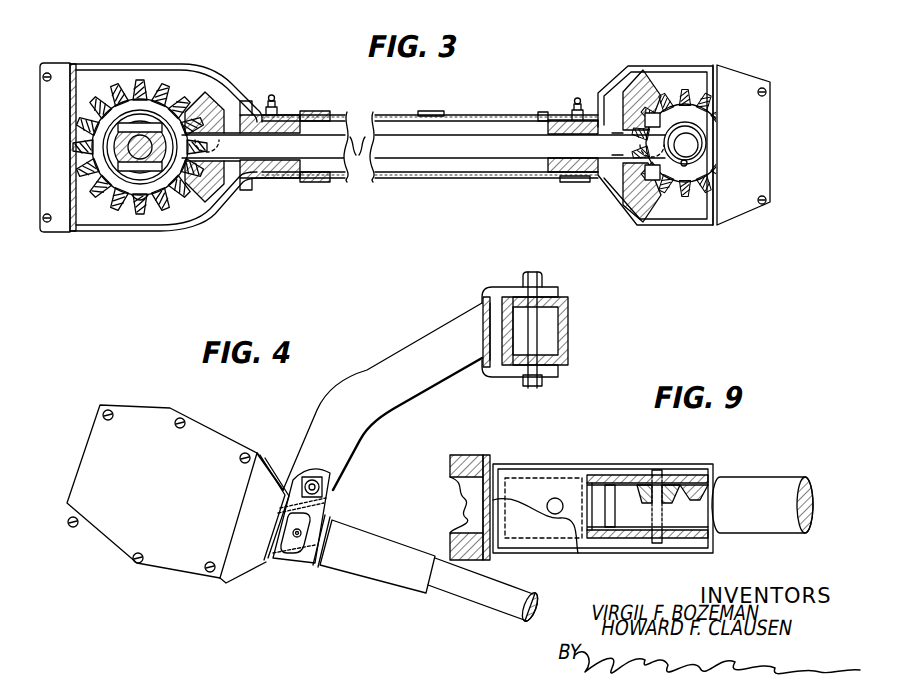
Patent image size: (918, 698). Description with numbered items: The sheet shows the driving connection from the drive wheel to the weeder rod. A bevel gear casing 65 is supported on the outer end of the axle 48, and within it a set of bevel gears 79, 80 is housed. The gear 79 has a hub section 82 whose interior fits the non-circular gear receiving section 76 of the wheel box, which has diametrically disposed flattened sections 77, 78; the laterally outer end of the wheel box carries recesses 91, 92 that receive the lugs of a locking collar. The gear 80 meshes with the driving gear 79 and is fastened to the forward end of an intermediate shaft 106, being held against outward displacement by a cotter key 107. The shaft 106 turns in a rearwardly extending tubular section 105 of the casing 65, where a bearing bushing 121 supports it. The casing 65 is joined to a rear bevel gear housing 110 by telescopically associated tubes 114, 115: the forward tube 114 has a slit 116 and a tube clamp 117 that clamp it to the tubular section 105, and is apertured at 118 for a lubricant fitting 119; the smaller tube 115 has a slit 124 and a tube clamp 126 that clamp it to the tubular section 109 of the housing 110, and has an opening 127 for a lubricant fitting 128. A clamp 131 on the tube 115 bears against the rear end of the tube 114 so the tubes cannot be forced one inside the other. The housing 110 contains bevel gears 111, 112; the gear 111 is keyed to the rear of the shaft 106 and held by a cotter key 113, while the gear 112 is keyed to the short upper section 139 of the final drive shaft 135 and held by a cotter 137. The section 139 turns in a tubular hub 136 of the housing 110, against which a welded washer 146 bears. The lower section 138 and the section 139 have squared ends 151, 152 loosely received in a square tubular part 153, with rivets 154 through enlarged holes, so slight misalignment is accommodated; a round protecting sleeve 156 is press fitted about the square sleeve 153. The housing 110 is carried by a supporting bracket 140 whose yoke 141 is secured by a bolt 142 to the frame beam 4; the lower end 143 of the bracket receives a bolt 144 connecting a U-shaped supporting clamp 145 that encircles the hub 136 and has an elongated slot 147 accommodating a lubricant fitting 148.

In FIG. 3, the bevel gear casing 65 is at (91, 60).
In FIG. 3, the flattened section 77 is at (118, 92).
In FIG. 3, the flattened section 78 is at (142, 200).
In FIG. 3, the bevel gear 79 is at (150, 112).
In FIG. 3, the cotter key 107 is at (186, 74).
In FIG. 3, the recess 91 is at (130, 127).
In FIG. 3, the axle 48 is at (128, 152).
In FIG. 3, the gear receiving section 76 is at (122, 168).
In FIG. 3, the recess 92 is at (137, 172).
In FIG. 3, the hub section 82 is at (190, 200).
In FIG. 3, the bevel gear 80 is at (212, 200).
In FIG. 3, the bearing bushing 121 is at (280, 138).
In FIG. 3, the telescoping tube 115 is at (465, 118).
In FIG. 3, the intermediate shaft 106 is at (356, 162).
In FIG. 3, the forward tube 114 is at (378, 118).
In FIG. 3, the aperture 118 is at (262, 111).
In FIG. 3, the saw cut 116 is at (265, 180).
In FIG. 3, the tubular section 105 is at (278, 183).
In FIG. 3, the lubricant fitting 119 is at (272, 96).
In FIG. 3, the tube clamp 117 is at (310, 111).
In FIG. 3, the clamp 131 is at (428, 111).
In FIG. 3, the opening 127 is at (565, 119).
In FIG. 3, the tubular section 109 is at (548, 172).
In FIG. 3, the tube clamp 126 is at (540, 114).
In FIG. 3, the saw cut 124 is at (578, 182).
In FIG. 3, the lubricant fitting 128 is at (578, 98).
In FIG. 3, the rear bevel gear housing 110 is at (621, 71).
In FIG. 4, the rear bevel gear housing 110 is at (170, 403).
In FIG. 3, the bevel gear 112 is at (712, 108).
In FIG. 3, the cotter 137 is at (712, 151).
In FIG. 3, the upper section 139 is at (681, 166).
In FIG. 9, the upper section 139 is at (461, 505).
In FIG. 3, the cotter key 113 is at (652, 151).
In FIG. 3, the bevel gear 111 is at (640, 212).
In FIG. 4, the tubular hub 136 is at (282, 528).
In FIG. 9, the tubular hub 136 is at (457, 456).
In FIG. 4, the supporting bracket 140 is at (367, 368).
In FIG. 4, the frame beam 4 is at (569, 333).
In FIG. 4, the yoke 141 is at (548, 369).
In FIG. 4, the bolt 142 is at (532, 388).
In FIG. 4, the lower end 143 is at (313, 443).
In FIG. 4, the bolt 144 is at (322, 487).
In FIG. 4, the elongated slot 147 is at (308, 530).
In FIG. 4, the gear box supporting clamp 145 is at (283, 552).
In FIG. 4, the lubricant fitting 148 is at (322, 566).
In FIG. 4, the protecting sleeve 156 is at (381, 568).
In FIG. 9, the protecting sleeve 156 is at (600, 465).
In FIG. 4, the lower section 138 is at (487, 600).
In FIG. 9, the lower section 138 is at (764, 486).
In FIG. 4, the final drive shaft 135 is at (501, 622).
In FIG. 9, the washer 146 is at (486, 456).
In FIG. 9, the squared end 151 is at (590, 476).
In FIG. 9, the squared end 152 is at (619, 495).
In FIG. 9, the square tubular part 153 is at (682, 484).
In FIG. 9, the rivets 154 is at (555, 497).